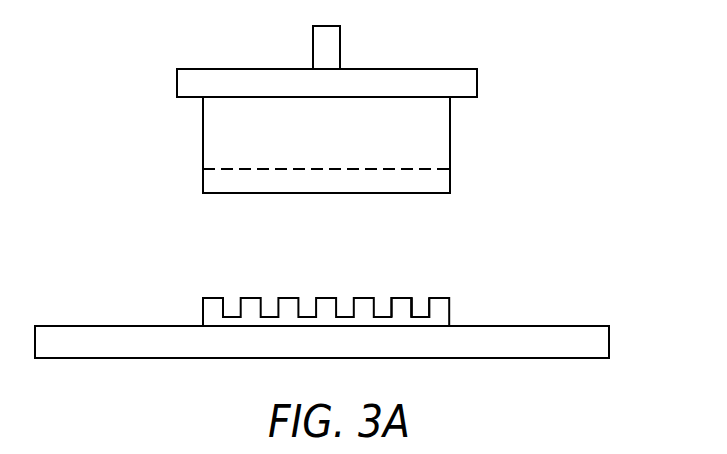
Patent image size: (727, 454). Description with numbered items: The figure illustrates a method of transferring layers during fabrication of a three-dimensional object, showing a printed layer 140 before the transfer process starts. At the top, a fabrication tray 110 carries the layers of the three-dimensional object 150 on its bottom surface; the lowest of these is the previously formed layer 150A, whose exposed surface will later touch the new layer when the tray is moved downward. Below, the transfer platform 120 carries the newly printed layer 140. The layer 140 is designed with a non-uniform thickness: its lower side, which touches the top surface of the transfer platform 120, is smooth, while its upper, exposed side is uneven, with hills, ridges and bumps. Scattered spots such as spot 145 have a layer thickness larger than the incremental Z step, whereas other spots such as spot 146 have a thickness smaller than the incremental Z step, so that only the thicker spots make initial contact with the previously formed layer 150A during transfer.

The fabrication tray 110 is at (477, 83).
The 3D object 150 is at (450, 139).
The previously formed layer 150A is at (450, 183).
The transfer platform 120 is at (609, 343).
The layer 140 is at (451, 318).
The spot 145 is at (403, 297).
The spot 146 is at (422, 316).